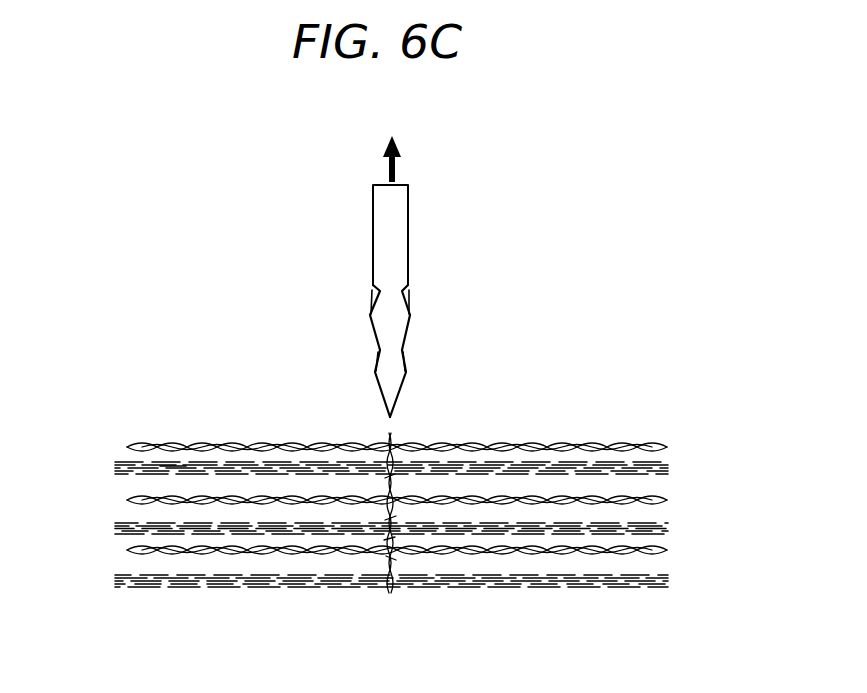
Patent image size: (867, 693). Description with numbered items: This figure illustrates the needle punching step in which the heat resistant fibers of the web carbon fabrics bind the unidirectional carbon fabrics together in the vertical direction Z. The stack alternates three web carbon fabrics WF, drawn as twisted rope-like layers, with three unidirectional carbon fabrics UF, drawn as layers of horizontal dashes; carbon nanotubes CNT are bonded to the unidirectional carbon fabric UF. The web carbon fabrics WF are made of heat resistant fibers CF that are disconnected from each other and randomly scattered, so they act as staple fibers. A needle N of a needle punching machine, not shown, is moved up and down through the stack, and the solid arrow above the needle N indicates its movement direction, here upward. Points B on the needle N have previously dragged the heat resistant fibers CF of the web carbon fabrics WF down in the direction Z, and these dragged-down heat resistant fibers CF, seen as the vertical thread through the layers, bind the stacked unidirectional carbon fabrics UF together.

The needle N is at (398, 257).
The points on the needle B is at (407, 357).
The carbon nanotubes CNT is at (174, 465).
The web carbon fabrics WF is at (723, 553).
The unidirectional carbon fabrics UF is at (96, 583).
The heat resistant fibers CF is at (277, 582).